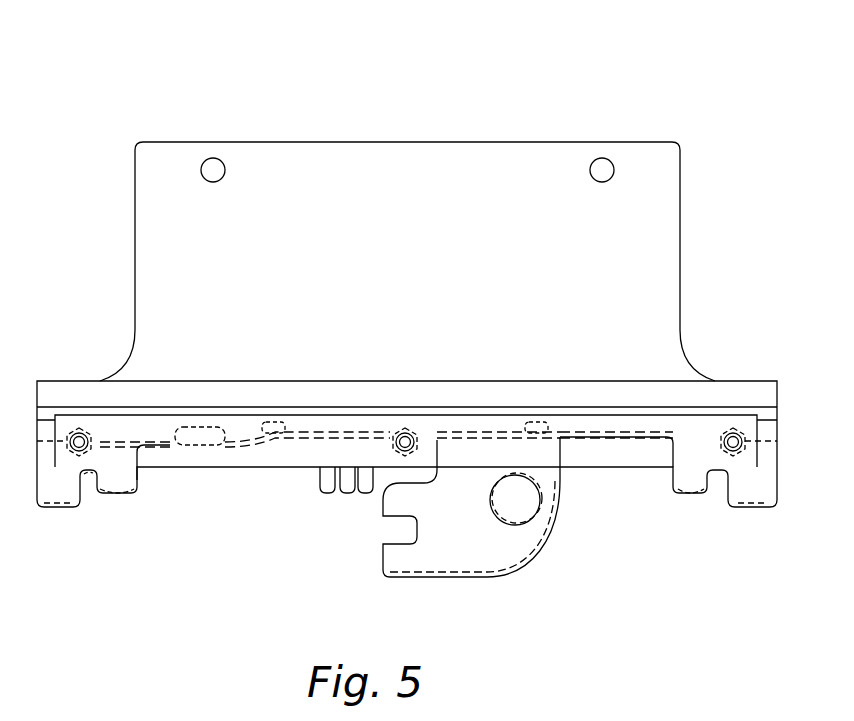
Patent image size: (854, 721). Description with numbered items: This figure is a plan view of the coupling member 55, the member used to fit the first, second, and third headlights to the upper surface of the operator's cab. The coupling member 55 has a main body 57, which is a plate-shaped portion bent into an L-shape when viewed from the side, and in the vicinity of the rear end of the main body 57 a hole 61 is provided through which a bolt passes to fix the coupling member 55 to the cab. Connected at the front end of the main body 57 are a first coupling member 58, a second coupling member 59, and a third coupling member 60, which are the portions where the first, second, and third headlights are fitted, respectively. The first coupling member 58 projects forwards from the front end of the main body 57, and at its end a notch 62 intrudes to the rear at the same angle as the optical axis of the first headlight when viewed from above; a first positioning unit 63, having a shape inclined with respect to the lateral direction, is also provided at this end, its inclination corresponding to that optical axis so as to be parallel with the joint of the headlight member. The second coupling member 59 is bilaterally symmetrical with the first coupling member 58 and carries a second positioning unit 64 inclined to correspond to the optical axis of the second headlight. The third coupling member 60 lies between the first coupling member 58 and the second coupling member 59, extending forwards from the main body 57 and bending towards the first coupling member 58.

The coupling member 55 is at (297, 87).
The main body 57 is at (412, 172).
The hole 61 is at (215, 165).
The first coupling member 58 is at (63, 495).
The second coupling member 59 is at (745, 495).
The third coupling member 60 is at (455, 557).
The notch 62 is at (95, 499).
The first positioning unit 63 is at (128, 492).
The second positioning unit 64 is at (685, 487).